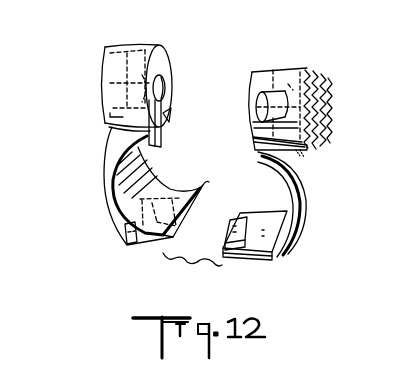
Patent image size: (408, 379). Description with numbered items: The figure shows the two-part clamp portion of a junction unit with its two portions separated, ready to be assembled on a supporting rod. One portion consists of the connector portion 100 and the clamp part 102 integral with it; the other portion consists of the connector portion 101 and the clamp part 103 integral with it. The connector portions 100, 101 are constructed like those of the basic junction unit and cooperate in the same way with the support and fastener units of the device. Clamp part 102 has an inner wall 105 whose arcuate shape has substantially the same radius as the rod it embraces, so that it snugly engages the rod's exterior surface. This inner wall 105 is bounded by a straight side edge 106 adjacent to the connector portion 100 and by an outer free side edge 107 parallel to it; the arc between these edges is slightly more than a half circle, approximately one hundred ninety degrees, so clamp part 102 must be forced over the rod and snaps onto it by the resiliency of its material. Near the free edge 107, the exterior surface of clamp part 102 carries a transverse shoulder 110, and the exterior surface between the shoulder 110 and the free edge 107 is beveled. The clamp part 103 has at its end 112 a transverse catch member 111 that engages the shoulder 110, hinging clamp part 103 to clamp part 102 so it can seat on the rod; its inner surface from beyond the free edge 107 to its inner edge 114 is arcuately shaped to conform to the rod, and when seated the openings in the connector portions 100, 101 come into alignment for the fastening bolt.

The connector portion 100 is at (152, 48).
The connector portion 101 is at (273, 64).
The clamp part 102 is at (106, 155).
The clamp part 103 is at (311, 152).
The inner wall 105 is at (125, 188).
The straight side edge 106 is at (158, 126).
The outer free side edge 107 is at (204, 184).
The transverse shoulder 110 is at (132, 232).
The transverse catch member 111 is at (250, 213).
The end of clamp part 112 is at (275, 258).
The inner edge 114 is at (256, 165).